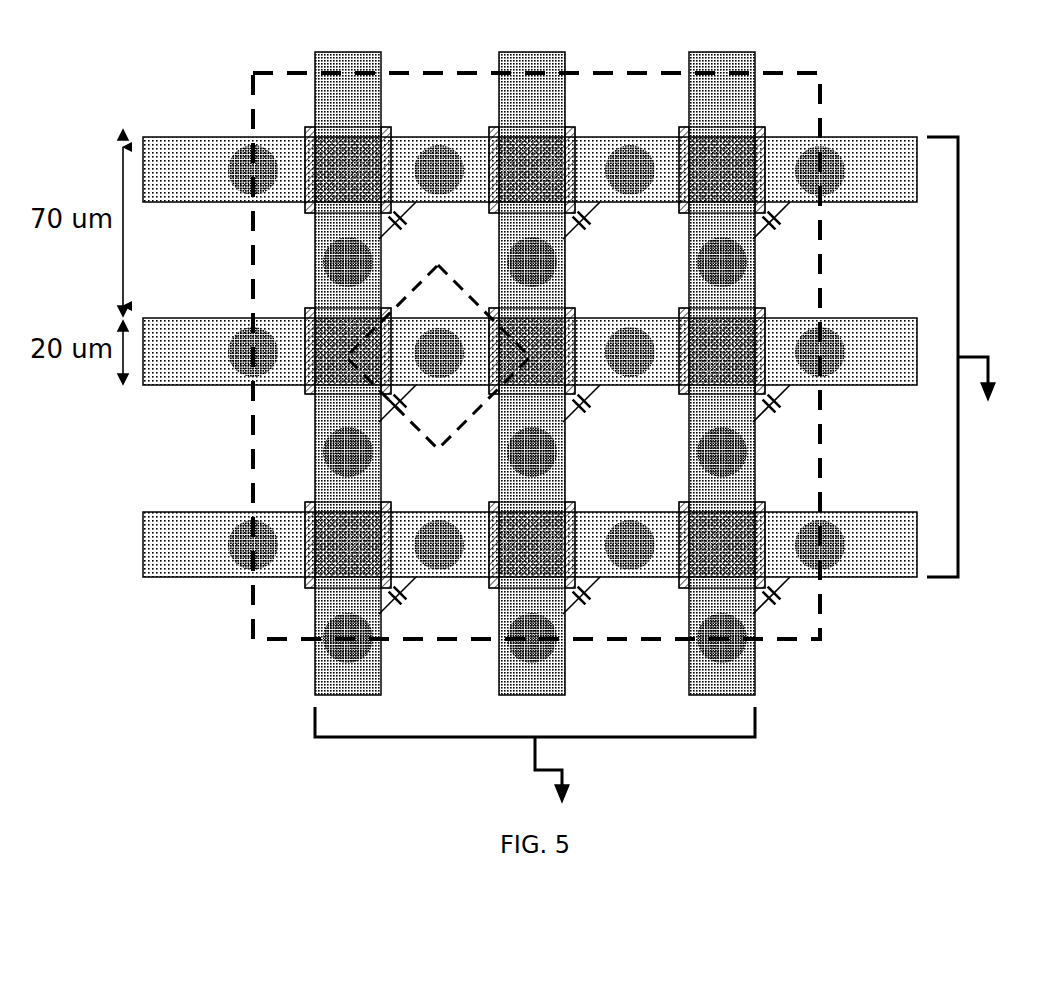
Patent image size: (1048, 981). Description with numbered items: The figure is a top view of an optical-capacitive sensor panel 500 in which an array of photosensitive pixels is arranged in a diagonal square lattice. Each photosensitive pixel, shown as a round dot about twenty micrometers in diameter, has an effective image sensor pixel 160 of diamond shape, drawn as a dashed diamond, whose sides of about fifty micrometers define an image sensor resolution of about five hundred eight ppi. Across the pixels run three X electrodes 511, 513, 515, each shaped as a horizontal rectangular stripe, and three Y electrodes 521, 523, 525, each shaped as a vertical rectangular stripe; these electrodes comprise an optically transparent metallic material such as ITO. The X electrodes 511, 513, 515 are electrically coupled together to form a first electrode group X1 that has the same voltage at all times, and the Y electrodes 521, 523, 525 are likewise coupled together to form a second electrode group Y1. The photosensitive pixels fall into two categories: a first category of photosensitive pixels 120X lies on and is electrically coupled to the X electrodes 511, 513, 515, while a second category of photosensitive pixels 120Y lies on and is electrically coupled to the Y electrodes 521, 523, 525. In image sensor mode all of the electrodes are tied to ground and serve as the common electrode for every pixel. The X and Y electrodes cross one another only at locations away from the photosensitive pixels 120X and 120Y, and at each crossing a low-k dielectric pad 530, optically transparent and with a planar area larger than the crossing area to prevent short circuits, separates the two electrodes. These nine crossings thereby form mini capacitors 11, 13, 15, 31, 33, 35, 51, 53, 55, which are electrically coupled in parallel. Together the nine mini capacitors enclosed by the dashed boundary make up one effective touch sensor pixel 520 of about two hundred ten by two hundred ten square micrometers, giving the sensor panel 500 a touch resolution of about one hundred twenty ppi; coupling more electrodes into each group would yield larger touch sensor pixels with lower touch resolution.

The optical-capacitive sensor panel 500 is at (530, 363).
The X electrode 511 is at (190, 150).
The X electrode 513 is at (186, 338).
The X electrode 515 is at (190, 530).
The Y electrode 521 is at (368, 682).
The Y electrode 523 is at (556, 682).
The Y electrode 525 is at (752, 682).
The effective touch sensor pixel 520 is at (820, 110).
The low-k dielectric pad 530 is at (307, 128).
The first category of photosensitive pixels 120X is at (441, 158).
The second category of photosensitive pixels 120Y is at (322, 262).
The effective image sensor pixel 160 is at (443, 447).
The mini capacitor 11 is at (442, 234).
The mini capacitor 13 is at (619, 234).
The mini capacitor 15 is at (809, 234).
The mini capacitor 31 is at (437, 416).
The mini capacitor 33 is at (619, 416).
The mini capacitor 35 is at (809, 416).
The mini capacitor 51 is at (439, 609).
The mini capacitor 53 is at (619, 609).
The mini capacitor 55 is at (809, 609).
The first electrode group X1 is at (978, 357).
The second electrode group Y1 is at (535, 754).